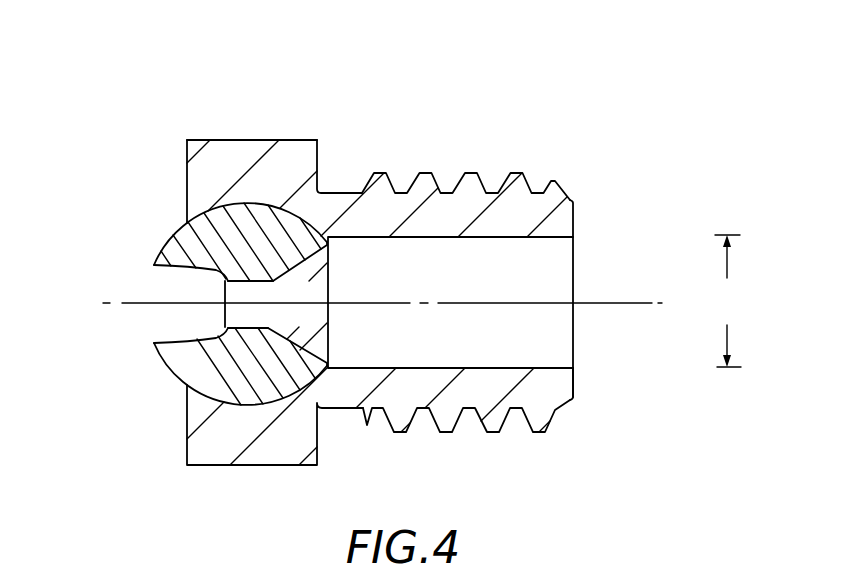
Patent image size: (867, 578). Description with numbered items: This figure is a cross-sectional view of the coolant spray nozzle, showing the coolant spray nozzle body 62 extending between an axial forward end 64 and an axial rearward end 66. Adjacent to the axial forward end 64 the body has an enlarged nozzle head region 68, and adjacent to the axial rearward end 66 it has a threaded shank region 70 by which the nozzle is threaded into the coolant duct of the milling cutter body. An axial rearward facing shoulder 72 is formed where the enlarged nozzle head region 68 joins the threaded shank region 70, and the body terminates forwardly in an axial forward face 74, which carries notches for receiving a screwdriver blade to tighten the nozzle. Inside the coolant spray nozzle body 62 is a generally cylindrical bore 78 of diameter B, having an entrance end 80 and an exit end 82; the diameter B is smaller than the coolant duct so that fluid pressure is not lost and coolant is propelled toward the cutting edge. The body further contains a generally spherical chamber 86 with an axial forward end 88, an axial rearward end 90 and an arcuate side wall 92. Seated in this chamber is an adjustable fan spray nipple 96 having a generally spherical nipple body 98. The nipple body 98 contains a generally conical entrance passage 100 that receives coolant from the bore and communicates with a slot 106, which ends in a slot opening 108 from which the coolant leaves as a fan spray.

The coolant spray nozzle body 62 is at (506, 202).
The axial forward end 64 is at (184, 163).
The axial rearward end 66 is at (583, 209).
The enlarged nozzle head region 68 is at (290, 140).
The threaded shank region 70 is at (437, 176).
The axial rearward facing shoulder 72 is at (322, 160).
The axial forward face 74 is at (187, 187).
The generally cylindrical bore 78 is at (513, 291).
The entrance end 80 is at (574, 337).
The exit end 82 is at (328, 322).
The generally spherical chamber 86 is at (200, 403).
The axial forward end 88 is at (187, 388).
The axial rearward end 90 is at (300, 262).
The arcuate side wall 92 is at (232, 206).
The adjustable fan spray nipple 96 is at (186, 255).
The generally spherical nipple body 98 is at (188, 247).
The generally conical entrance passage 100 is at (305, 290).
The slot 106 is at (203, 317).
The slot opening 108 is at (150, 290).
The diameter of the generally cylindrical bore B is at (728, 301).